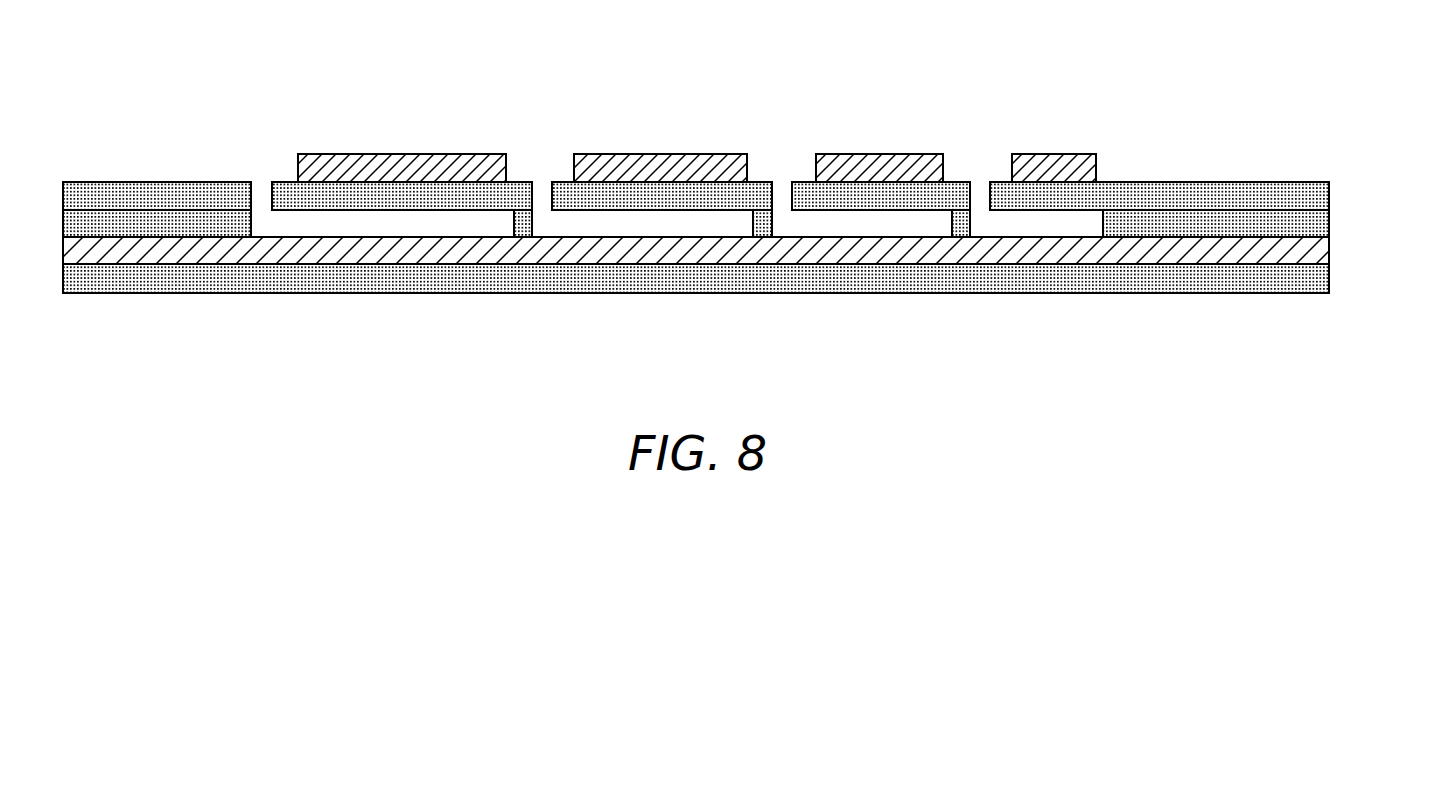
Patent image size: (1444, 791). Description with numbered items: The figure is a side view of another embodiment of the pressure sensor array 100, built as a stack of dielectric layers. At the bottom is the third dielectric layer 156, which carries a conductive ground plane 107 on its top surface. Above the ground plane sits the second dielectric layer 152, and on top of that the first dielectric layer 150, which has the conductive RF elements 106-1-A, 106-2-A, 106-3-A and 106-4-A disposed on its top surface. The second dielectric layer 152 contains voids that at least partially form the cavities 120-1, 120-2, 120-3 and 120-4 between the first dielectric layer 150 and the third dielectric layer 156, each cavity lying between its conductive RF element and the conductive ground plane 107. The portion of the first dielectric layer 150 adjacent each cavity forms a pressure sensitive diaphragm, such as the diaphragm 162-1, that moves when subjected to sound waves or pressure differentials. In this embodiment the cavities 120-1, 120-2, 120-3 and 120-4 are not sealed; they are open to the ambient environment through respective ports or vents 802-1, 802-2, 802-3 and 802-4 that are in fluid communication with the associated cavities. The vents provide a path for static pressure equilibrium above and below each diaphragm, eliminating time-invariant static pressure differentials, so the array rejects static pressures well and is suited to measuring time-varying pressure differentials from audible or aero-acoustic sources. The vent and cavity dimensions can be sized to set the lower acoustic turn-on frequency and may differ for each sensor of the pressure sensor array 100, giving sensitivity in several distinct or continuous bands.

The pressure sensor array 100 is at (156, 58).
The port 802-1 is at (261, 182).
The port 802-2 is at (542, 180).
The port 802-3 is at (780, 180).
The port 802-4 is at (979, 180).
The conductive RF element 106-1-A is at (417, 153).
The conductive RF element 106-2-A is at (677, 153).
The conductive RF element 106-3-A is at (910, 155).
The conductive RF element 106-4-A is at (1083, 153).
The cavity 120-1 is at (326, 227).
The cavity 120-2 is at (646, 227).
The cavity 120-3 is at (879, 227).
The cavity 120-4 is at (1057, 227).
The pressure sensitive diaphragm 162-1 is at (390, 216).
The first dielectric layer 150 is at (1330, 194).
The second dielectric layer 152 is at (1330, 222).
The conductive ground plane 107 is at (1330, 250).
The third dielectric layer 156 is at (1330, 278).